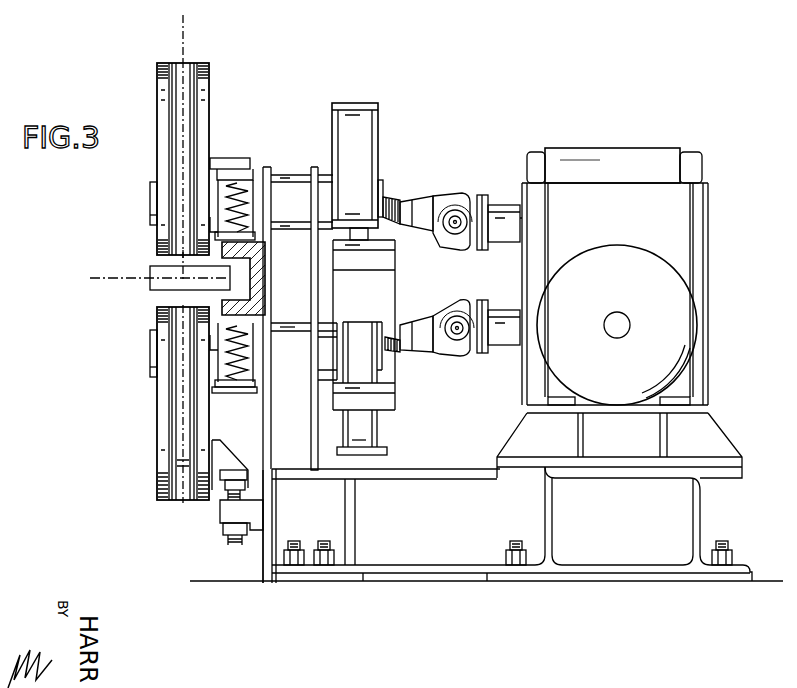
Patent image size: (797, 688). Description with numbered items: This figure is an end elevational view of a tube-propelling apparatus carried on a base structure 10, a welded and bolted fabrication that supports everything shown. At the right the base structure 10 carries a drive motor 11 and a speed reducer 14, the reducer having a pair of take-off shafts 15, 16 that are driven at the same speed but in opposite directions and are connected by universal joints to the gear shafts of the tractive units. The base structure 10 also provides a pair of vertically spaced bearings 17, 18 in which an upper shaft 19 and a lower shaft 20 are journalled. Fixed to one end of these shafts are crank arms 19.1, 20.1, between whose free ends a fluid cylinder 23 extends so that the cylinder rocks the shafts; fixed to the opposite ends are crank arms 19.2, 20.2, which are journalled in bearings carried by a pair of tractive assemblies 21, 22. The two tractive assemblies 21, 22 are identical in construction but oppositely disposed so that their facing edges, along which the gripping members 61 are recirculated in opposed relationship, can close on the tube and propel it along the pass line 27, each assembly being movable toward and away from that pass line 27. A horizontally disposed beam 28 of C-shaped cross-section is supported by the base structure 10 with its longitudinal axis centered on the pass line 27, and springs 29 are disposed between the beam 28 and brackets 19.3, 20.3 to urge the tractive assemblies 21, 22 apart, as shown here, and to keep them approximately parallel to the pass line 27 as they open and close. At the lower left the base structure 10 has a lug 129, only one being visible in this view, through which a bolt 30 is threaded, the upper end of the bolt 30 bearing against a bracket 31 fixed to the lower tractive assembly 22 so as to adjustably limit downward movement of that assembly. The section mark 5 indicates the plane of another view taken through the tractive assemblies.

The section line of FIG. 5 is at (180, 22).
The base structure 10 is at (743, 452).
The drive motor 11 is at (676, 292).
The speed reducer 14 is at (645, 155).
The take-off shaft 15 is at (517, 215).
The take-off shaft 16 is at (520, 344).
The bearing 17 is at (286, 170).
The bearing 18 is at (287, 330).
The shaft 19 is at (380, 182).
The crank arm 19.1 is at (362, 127).
The crank arm 19.2 is at (227, 163).
The bracket 19.3 is at (233, 165).
The shaft 20 is at (340, 361).
The crank arm 20.1 is at (363, 433).
The crank arm 20.2 is at (157, 320).
The bracket 20.3 is at (236, 393).
The tractive assembly 21 is at (152, 163).
The tractive assembly 22 is at (153, 435).
The fluid cylinder 23 is at (393, 291).
The pass line 27 is at (90, 283).
The beam 28 is at (258, 268).
The spring 29 is at (236, 178).
The bolt 30 is at (236, 545).
The bracket 31 is at (222, 463).
The gripping member 61 is at (187, 468).
The lug 129 is at (230, 512).